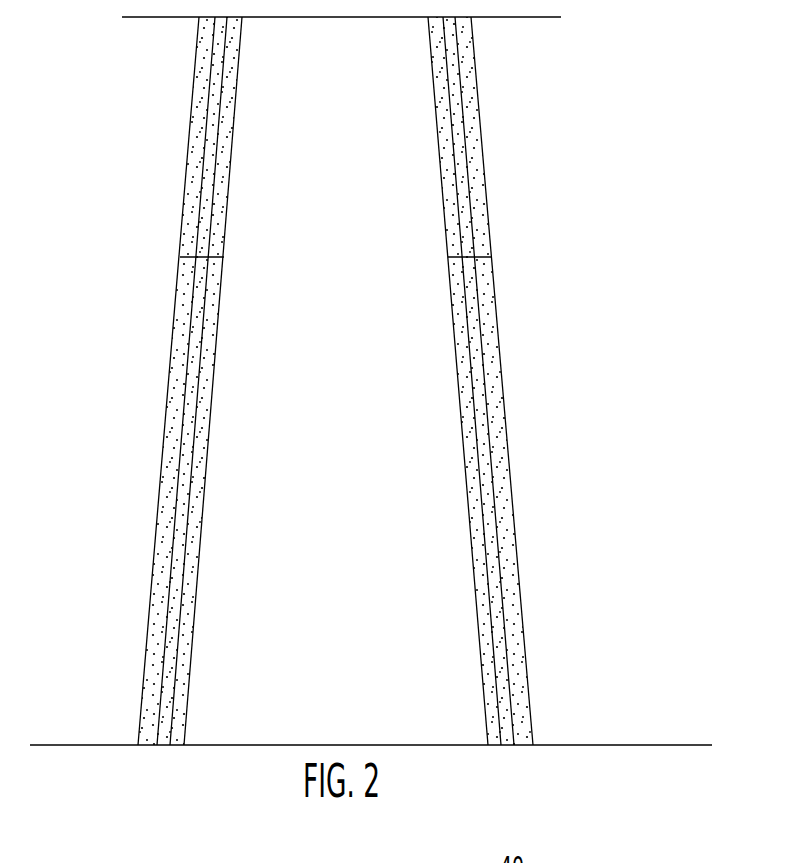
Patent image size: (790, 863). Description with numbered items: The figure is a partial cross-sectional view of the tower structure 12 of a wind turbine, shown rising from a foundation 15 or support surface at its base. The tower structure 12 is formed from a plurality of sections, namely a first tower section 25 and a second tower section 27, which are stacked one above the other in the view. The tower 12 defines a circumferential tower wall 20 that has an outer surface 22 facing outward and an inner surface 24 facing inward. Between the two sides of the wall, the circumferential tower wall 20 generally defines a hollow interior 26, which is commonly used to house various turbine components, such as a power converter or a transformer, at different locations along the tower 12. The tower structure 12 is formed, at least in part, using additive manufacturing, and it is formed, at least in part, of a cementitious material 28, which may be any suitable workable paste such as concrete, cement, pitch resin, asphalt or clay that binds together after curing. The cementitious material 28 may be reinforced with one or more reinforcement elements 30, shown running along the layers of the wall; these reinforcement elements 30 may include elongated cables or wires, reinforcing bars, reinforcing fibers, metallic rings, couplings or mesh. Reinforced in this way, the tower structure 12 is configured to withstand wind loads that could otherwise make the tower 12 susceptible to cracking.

The tower structure 12 is at (596, 217).
The foundation 15 is at (626, 744).
The circumferential tower wall 20 is at (186, 446).
The outer surface 22 is at (153, 613).
The inner surface 24 is at (199, 553).
The first tower section 25 is at (153, 528).
The hollow interior 26 is at (346, 332).
The second tower section 27 is at (190, 118).
The cementitious material 28 is at (209, 212).
The reinforcement element 30 is at (210, 396).